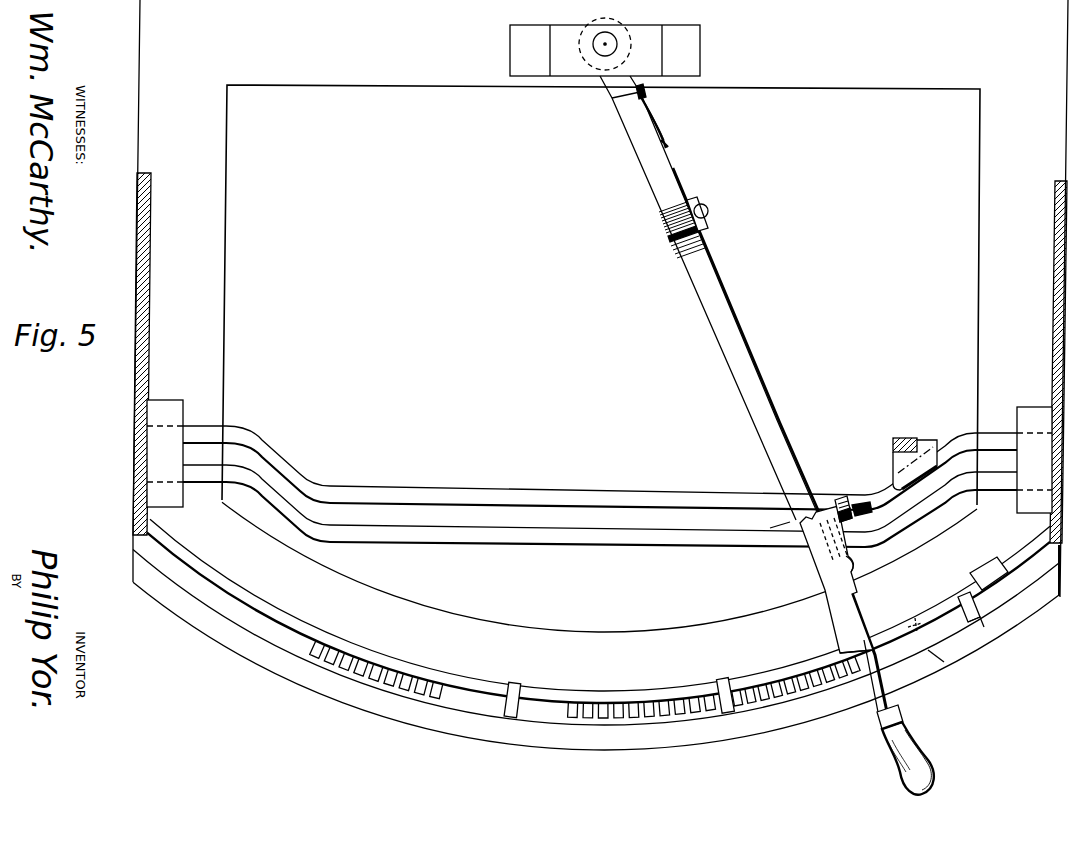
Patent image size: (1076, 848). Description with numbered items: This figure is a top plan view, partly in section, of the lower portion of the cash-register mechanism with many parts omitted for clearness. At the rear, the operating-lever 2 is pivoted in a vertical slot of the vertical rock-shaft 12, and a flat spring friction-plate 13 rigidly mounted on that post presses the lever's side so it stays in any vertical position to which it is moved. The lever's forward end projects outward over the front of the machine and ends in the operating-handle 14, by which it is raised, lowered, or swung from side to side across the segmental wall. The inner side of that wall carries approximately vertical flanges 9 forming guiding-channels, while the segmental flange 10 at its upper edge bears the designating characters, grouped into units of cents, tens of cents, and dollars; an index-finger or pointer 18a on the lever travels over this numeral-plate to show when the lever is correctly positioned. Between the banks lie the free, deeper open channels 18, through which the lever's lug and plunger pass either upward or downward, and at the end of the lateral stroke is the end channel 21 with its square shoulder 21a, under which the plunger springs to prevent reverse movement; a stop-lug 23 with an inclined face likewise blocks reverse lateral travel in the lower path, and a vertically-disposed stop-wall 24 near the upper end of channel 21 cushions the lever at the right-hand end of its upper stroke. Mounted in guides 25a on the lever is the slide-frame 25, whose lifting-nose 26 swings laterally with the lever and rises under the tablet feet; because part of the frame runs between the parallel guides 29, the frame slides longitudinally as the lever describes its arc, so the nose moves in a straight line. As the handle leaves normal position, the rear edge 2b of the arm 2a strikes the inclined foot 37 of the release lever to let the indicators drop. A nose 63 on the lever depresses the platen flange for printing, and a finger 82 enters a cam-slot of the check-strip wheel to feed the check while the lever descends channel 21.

The operating-lever 2 is at (743, 394).
The arm of the operating-lever 2a is at (830, 578).
The rear edge of the arm 2b is at (767, 516).
The vertical flanges 9 is at (396, 668).
The segmental flange 10 is at (256, 658).
The vertical rock-shaft 12 is at (591, 25).
The flat spring friction-plate 13 is at (660, 108).
The operating-handle 14 is at (914, 748).
The open groove or channel 18 is at (512, 692).
The index-finger or pointer 18a is at (932, 668).
The end groove or channel 21 is at (980, 616).
The square shoulder 21a is at (962, 598).
The stop-lug 23 is at (905, 618).
The stop-wall 24 is at (985, 560).
The slide-frame 25 is at (728, 290).
The guides for the slide-frame 25a is at (708, 208).
The lifting-nose 26 is at (806, 512).
The guides 29 is at (493, 487).
The horizontally-extending head 37 is at (894, 454).
The nose 63 is at (845, 635).
The finger 82 is at (848, 505).